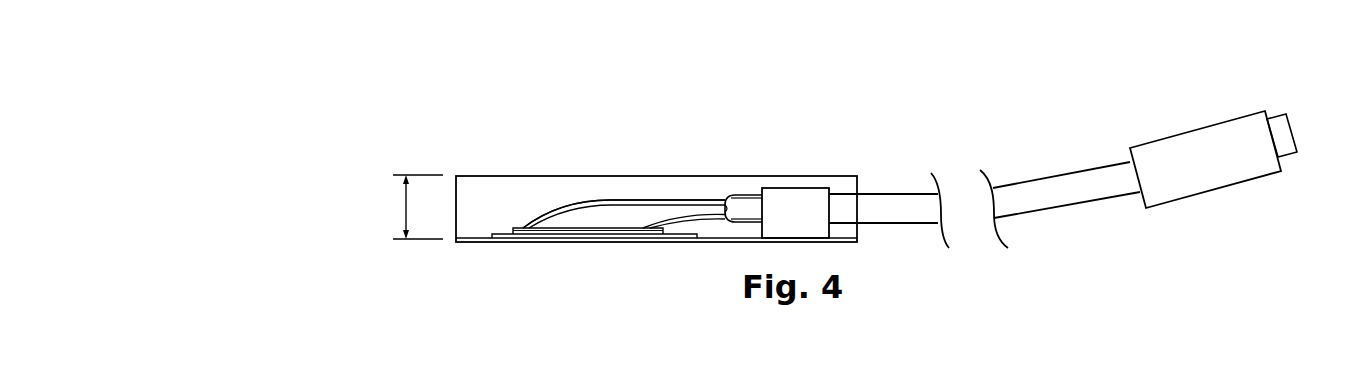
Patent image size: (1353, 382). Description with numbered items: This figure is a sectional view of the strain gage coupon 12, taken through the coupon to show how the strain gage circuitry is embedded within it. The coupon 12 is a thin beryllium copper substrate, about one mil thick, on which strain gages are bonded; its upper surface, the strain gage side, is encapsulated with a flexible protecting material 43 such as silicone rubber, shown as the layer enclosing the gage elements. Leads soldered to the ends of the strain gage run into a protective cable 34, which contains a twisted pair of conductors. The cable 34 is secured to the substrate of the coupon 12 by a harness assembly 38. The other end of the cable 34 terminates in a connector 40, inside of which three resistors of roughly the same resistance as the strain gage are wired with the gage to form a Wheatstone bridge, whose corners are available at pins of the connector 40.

The strain gage coupon 12 is at (459, 138).
The flexible protecting material 43 is at (528, 200).
The protective cable 34 is at (747, 191).
The harness assembly 38 is at (805, 188).
The connector 40 is at (1200, 128).